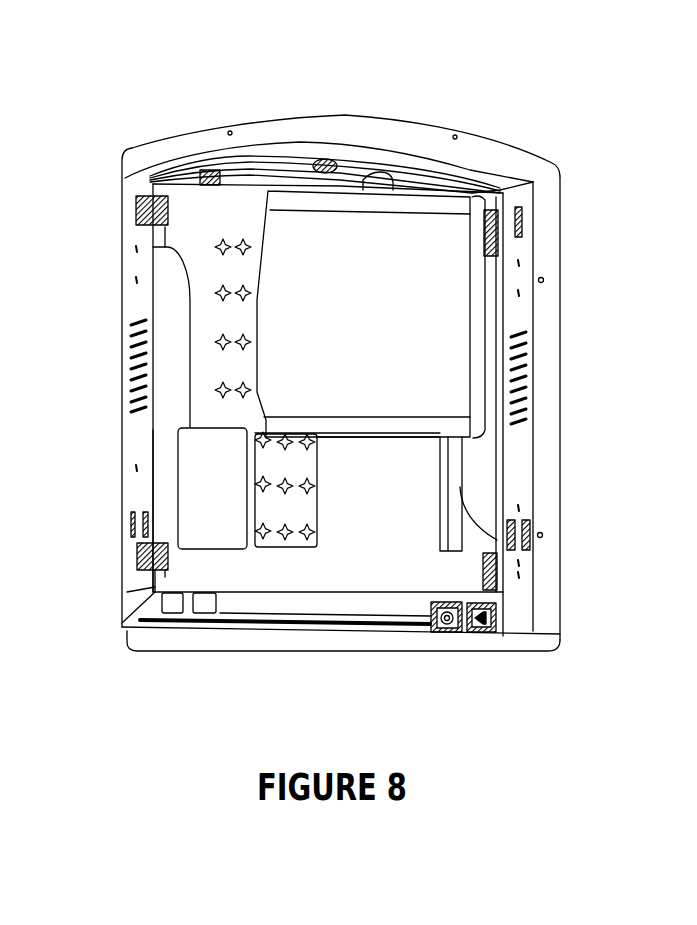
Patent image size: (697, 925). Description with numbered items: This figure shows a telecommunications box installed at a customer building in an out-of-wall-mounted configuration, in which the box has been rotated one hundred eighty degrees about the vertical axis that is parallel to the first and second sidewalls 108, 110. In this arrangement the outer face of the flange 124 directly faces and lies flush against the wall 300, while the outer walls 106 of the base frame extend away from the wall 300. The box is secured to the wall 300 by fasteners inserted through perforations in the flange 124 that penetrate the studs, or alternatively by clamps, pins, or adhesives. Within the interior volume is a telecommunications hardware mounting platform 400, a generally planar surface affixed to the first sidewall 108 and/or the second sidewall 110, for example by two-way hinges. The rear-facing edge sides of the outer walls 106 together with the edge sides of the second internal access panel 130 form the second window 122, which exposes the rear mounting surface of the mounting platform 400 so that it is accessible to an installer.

The flange 124 is at (300, 135).
The telecommunications hardware mounting platform 400 is at (192, 238).
The outer walls 106 is at (145, 310).
The second sidewall 110 is at (145, 437).
The wall 300 is at (662, 238).
The second window 122 is at (428, 370).
The first sidewall 108 is at (515, 433).
The second internal access panel 130 is at (458, 637).